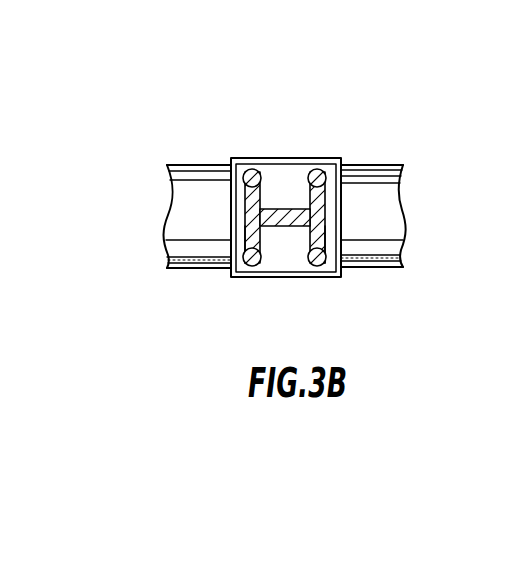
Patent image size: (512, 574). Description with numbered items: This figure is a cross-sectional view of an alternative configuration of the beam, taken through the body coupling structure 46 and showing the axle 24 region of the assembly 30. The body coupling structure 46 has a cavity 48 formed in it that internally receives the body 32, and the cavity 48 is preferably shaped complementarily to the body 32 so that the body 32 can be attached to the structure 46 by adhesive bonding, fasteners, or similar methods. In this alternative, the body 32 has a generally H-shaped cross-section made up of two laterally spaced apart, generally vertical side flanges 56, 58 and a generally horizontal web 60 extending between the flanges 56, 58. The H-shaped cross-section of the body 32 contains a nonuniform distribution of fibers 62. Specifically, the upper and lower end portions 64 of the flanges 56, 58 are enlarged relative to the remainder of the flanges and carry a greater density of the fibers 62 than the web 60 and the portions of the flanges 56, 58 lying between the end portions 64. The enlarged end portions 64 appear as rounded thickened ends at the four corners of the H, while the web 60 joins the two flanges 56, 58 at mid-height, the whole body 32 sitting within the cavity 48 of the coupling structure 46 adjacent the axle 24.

The axle 24 is at (392, 268).
The joint assembly 30 is at (393, 112).
The body 32 is at (293, 203).
The body coupling structure 46 is at (265, 163).
The cavity 48 is at (252, 197).
The side flange 56 is at (250, 225).
The side flange 58 is at (326, 228).
The web 60 is at (285, 227).
The fibers 62 is at (325, 207).
The end portions 64 is at (247, 173).